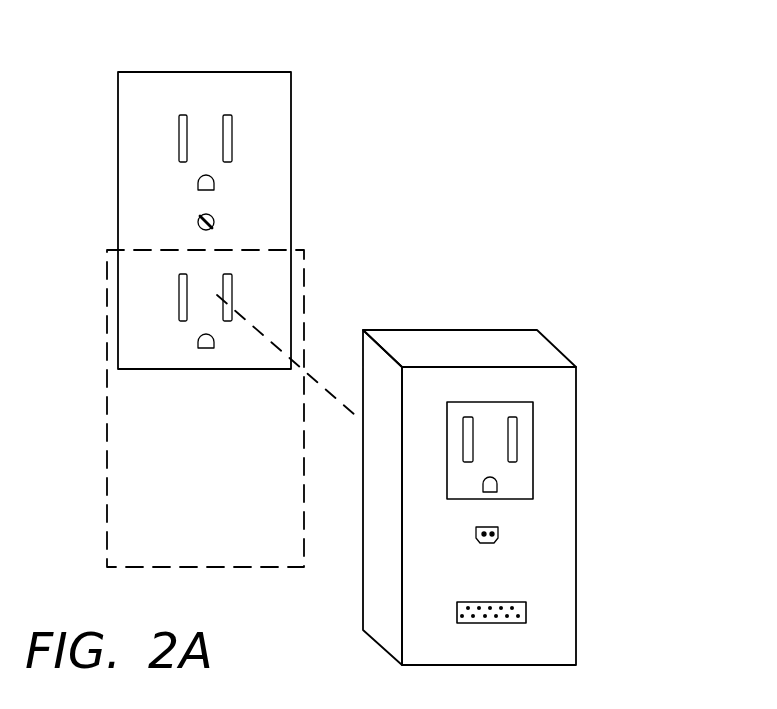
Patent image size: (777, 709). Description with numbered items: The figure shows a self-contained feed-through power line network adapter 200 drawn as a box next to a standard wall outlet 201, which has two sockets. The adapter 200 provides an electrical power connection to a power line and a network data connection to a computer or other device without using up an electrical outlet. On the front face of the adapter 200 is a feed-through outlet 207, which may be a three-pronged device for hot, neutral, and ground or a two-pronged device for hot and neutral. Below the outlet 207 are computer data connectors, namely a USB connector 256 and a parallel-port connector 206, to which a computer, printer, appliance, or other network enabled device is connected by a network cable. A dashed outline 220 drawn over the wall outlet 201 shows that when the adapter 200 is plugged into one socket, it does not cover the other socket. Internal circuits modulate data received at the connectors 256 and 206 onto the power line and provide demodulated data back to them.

The self-contained feed-through power line network adapter 200 is at (420, 330).
The standard wall outlet 201 is at (212, 72).
The outline 220 is at (298, 247).
The feed-through outlet 207 is at (527, 440).
The USB connector 256 is at (498, 535).
The parallel-port connector 206 is at (503, 602).